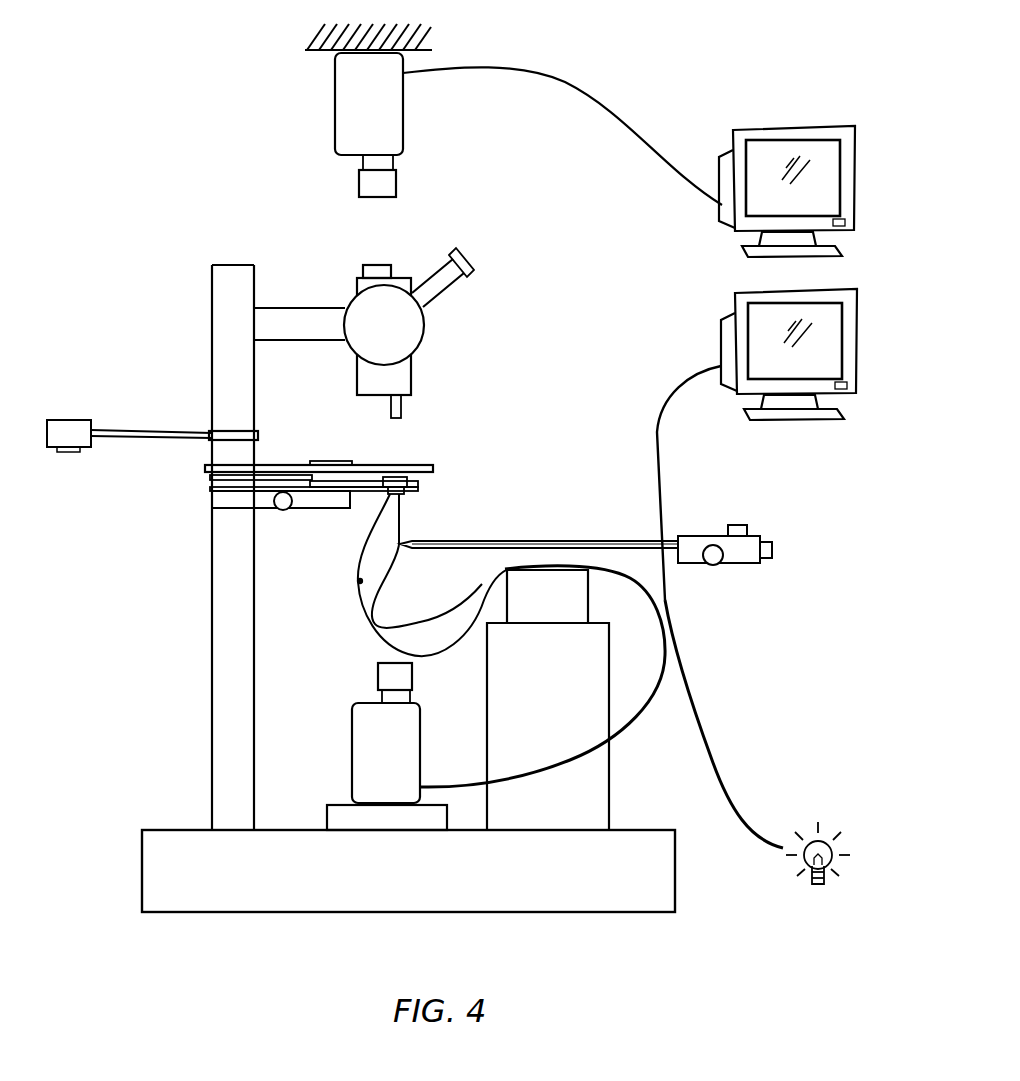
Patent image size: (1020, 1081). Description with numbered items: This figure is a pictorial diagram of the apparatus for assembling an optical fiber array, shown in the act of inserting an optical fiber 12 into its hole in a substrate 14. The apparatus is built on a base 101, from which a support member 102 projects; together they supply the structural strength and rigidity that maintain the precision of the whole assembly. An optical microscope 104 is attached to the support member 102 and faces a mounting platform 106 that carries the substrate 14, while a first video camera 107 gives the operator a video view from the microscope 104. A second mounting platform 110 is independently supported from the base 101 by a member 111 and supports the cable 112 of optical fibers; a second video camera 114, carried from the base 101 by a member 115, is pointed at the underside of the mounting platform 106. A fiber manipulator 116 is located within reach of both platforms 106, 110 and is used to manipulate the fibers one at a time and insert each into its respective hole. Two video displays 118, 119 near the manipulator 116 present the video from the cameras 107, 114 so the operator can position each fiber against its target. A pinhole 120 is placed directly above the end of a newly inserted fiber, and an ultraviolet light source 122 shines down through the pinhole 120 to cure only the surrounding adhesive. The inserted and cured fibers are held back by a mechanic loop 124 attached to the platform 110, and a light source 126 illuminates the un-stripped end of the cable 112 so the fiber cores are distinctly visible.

The optical fiber 12 is at (398, 560).
The substrate 14 is at (408, 480).
The base 101 is at (143, 872).
The support member 102 is at (212, 652).
The optical microscope 104 is at (424, 326).
The mounting platform 106 is at (356, 500).
The first video camera 107 is at (338, 103).
The second mounting platform 110 is at (588, 608).
The member 111 is at (609, 788).
The cable 112 is at (697, 706).
The second video camera 114 is at (352, 755).
The member 115 is at (327, 814).
The fiber manipulator 116 is at (730, 566).
The video display 118 is at (808, 124).
The video display 119 is at (811, 288).
The pinhole 120 is at (362, 465).
The ultraviolet light source 122 is at (70, 420).
The mechanic loop 124 is at (357, 581).
The light source 126 is at (815, 884).